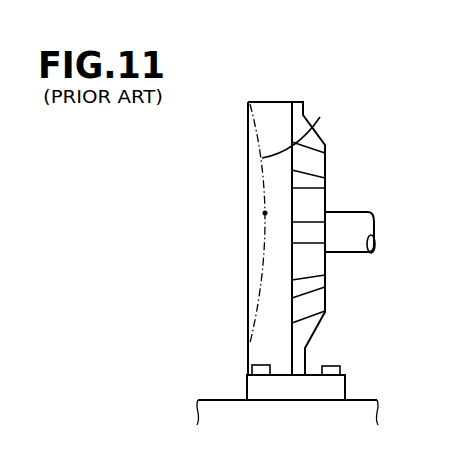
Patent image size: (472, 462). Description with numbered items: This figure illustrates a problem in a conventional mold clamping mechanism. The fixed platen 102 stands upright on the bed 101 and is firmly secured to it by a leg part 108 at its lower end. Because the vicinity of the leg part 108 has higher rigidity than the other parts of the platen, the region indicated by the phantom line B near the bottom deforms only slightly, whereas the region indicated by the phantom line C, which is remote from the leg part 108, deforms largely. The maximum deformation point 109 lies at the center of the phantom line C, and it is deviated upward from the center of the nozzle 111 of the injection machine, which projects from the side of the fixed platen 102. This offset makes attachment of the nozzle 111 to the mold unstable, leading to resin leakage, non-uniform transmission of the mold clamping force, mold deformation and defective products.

The bed 101 is at (358, 408).
The fixed platen 102 is at (273, 102).
The leg part 108 is at (295, 388).
The maximum deformation point 109 is at (263, 213).
The nozzle 111 is at (341, 222).
The phantom line B is at (241, 342).
The phantom line C is at (320, 117).